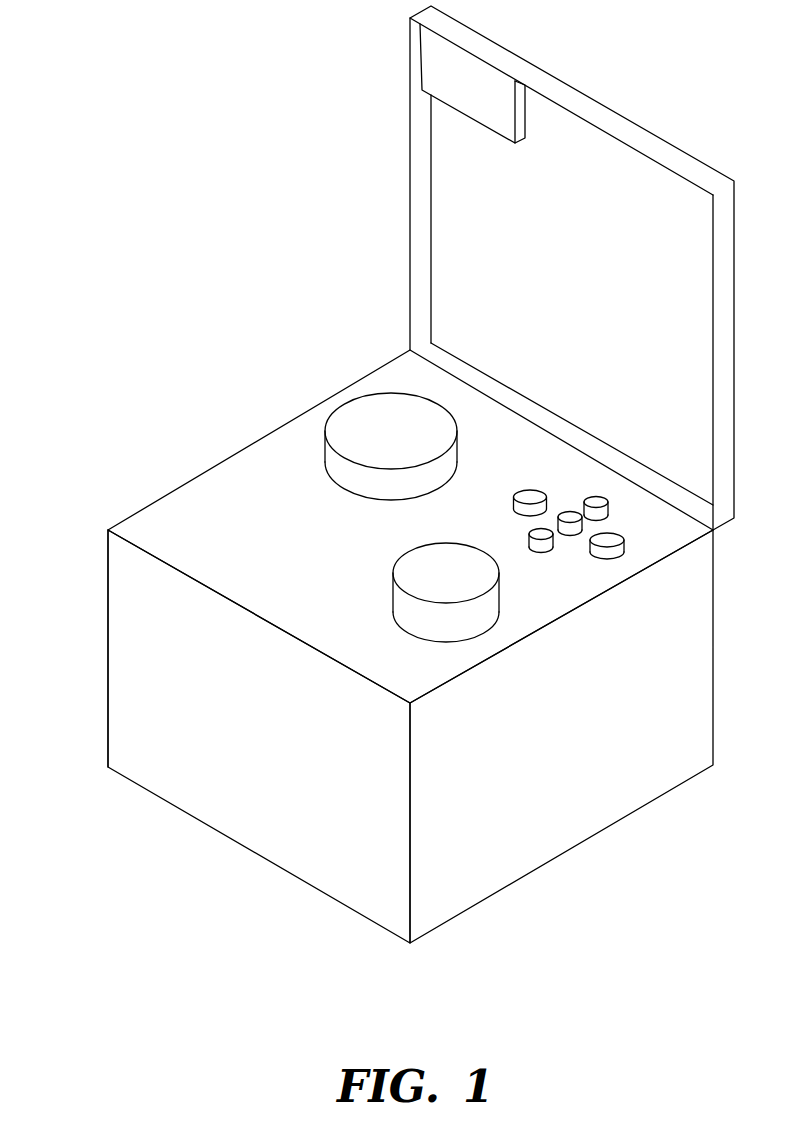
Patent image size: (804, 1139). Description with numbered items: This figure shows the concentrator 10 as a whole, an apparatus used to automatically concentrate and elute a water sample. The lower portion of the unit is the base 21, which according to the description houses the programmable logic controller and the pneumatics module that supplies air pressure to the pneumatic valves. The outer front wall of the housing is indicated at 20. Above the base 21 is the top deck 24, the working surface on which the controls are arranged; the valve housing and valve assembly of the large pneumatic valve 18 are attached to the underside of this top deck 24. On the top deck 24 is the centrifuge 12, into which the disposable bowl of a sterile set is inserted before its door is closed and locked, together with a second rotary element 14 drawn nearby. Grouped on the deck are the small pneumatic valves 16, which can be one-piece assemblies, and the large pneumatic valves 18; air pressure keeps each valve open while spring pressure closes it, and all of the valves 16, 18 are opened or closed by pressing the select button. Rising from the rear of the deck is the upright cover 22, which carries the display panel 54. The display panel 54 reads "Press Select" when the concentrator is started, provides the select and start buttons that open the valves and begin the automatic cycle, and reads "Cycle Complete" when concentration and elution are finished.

The concentrator 10 is at (186, 364).
The centrifuge 12 is at (330, 457).
The second rotary control dial 14 is at (394, 604).
The small pneumatic valves 16 is at (524, 493).
The large pneumatic valve 18 is at (597, 496).
The front face of housing 20 is at (281, 751).
The base 21 is at (115, 643).
The lid / cover panel 22 is at (590, 284).
The top deck 24 is at (288, 556).
The display panel 54 is at (432, 65).